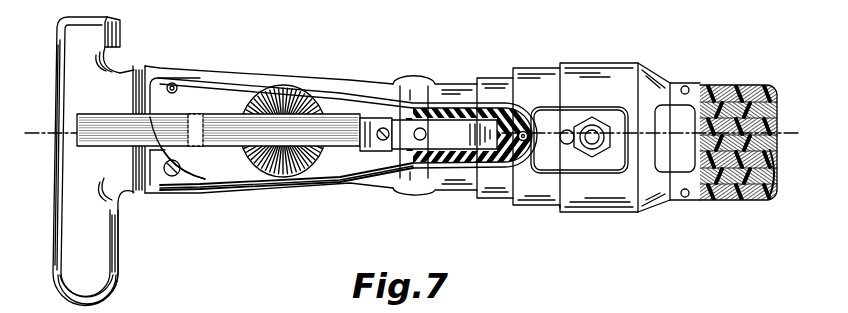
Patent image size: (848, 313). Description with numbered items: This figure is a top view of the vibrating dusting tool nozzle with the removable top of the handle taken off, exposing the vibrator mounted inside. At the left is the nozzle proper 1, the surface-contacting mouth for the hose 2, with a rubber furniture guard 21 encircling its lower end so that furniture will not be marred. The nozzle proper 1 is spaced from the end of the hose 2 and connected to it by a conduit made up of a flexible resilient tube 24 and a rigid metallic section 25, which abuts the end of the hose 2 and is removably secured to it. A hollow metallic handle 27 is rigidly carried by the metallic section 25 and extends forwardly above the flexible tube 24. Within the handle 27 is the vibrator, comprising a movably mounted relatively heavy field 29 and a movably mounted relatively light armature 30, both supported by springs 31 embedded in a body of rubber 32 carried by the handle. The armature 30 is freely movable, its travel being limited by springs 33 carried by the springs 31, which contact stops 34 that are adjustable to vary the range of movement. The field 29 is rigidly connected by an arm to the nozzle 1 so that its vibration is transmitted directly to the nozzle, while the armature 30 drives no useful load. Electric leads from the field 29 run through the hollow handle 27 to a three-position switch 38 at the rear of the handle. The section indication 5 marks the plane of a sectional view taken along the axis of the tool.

The nozzle proper 1 is at (93, 161).
The hose 2 is at (733, 202).
The section line 5- 5 is at (25, 133).
The rubber furniture guard 21 is at (121, 278).
The flexible resilient tube 24 is at (190, 196).
The rigid metallic section 25 is at (463, 182).
The hollow metallic handle 27 is at (252, 182).
The field 29 is at (301, 98).
The armature 30 is at (225, 112).
The springs 31 is at (428, 134).
The body of rubber 32 is at (456, 108).
The springs 33 is at (411, 134).
The stops 34 is at (383, 128).
The three-position switch 38 is at (591, 122).